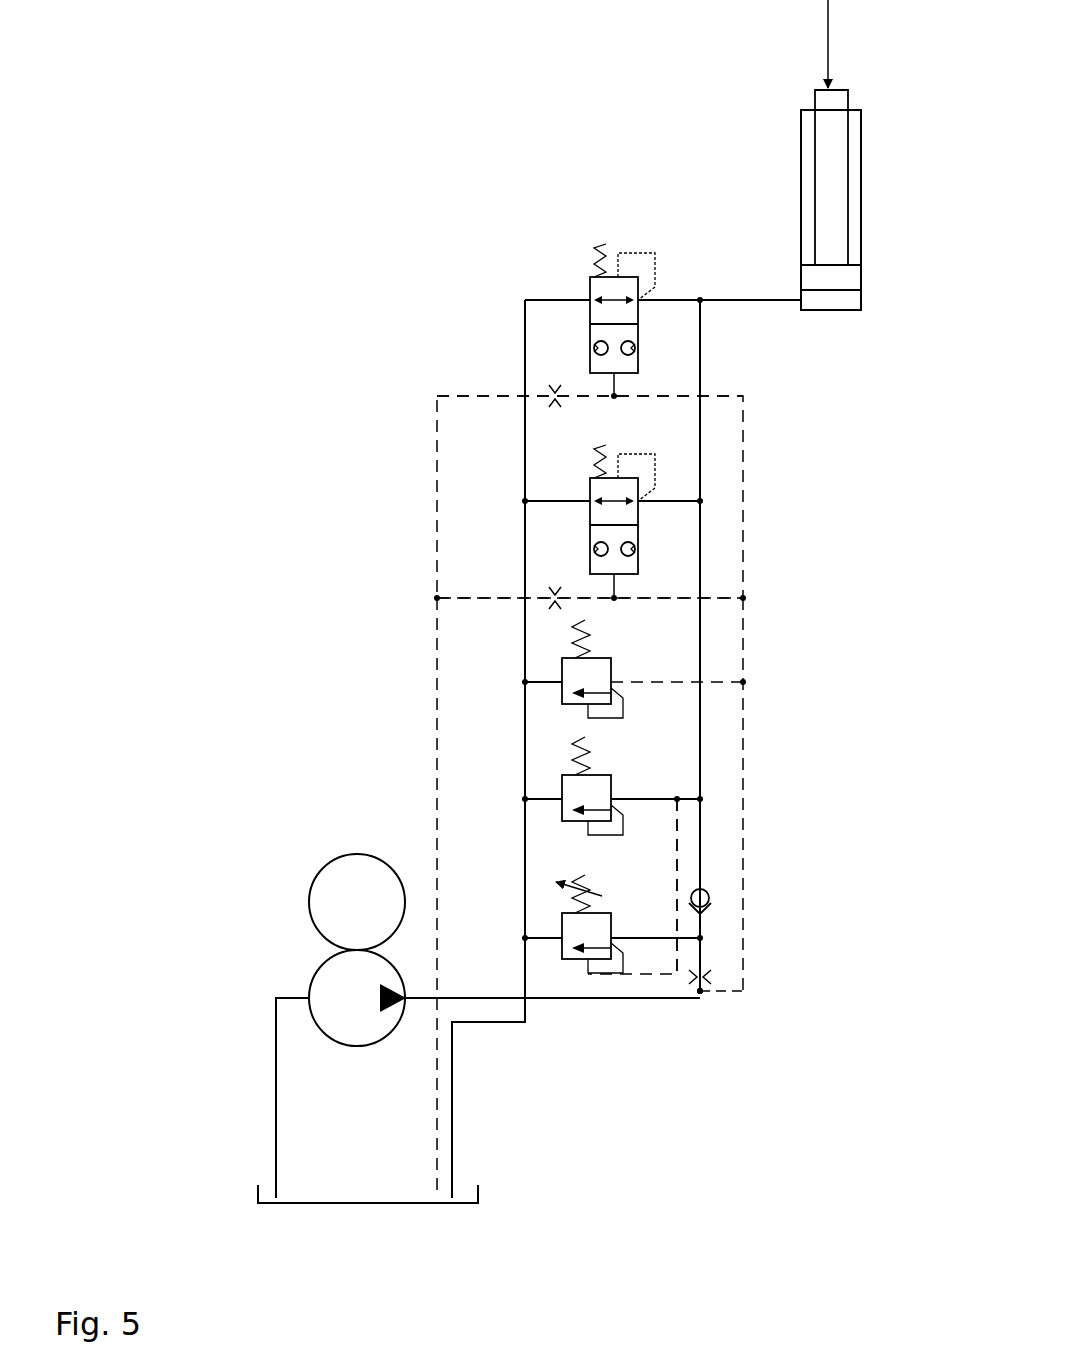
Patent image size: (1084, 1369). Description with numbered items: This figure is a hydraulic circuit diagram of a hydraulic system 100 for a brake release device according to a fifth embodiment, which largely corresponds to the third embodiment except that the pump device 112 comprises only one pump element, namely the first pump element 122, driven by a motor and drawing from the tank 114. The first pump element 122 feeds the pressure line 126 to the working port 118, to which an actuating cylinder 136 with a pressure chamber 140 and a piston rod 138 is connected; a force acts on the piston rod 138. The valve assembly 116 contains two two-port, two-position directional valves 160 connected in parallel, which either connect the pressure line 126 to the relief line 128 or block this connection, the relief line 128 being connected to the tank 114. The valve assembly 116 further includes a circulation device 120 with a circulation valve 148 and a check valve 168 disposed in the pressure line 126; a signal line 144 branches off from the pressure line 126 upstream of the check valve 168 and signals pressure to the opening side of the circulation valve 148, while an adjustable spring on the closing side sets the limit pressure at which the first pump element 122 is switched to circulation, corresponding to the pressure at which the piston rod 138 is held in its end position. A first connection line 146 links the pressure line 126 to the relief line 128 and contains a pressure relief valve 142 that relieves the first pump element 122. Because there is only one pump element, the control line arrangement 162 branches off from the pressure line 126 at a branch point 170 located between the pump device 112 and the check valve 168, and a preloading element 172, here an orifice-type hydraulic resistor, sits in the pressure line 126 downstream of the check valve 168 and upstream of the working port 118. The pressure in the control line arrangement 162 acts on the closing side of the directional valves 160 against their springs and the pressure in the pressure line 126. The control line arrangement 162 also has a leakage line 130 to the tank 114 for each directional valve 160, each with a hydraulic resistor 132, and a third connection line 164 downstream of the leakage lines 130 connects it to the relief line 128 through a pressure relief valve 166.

The hydraulic system 100 is at (272, 392).
The pump device 112 is at (292, 950).
The tank 114 is at (462, 1185).
The valve assembly 116 is at (793, 598).
The working port 118 is at (700, 298).
The circulation device 120 is at (607, 888).
The first pump element 122 is at (312, 975).
The pressure line 126 is at (703, 537).
The relief line 128 is at (525, 728).
The leakage line 130 is at (482, 392).
The hydraulic resistor 132 is at (549, 405).
The actuating cylinder 136 is at (787, 180).
The piston rod 138 is at (838, 178).
The pressure chamber 140 is at (830, 305).
The pressure relief valve 142 is at (606, 775).
The signal line 144 is at (680, 827).
The first connection line 146 is at (660, 797).
The circulation valve 148 is at (612, 928).
The 2/2-way directional valve 160 is at (600, 280).
The control line arrangement 162 is at (745, 768).
The third connection line 164 is at (718, 683).
The pressure relief valve 166 is at (605, 656).
The check valve 168 is at (710, 905).
The branch point 170 is at (702, 995).
The preloading element 172 is at (690, 978).